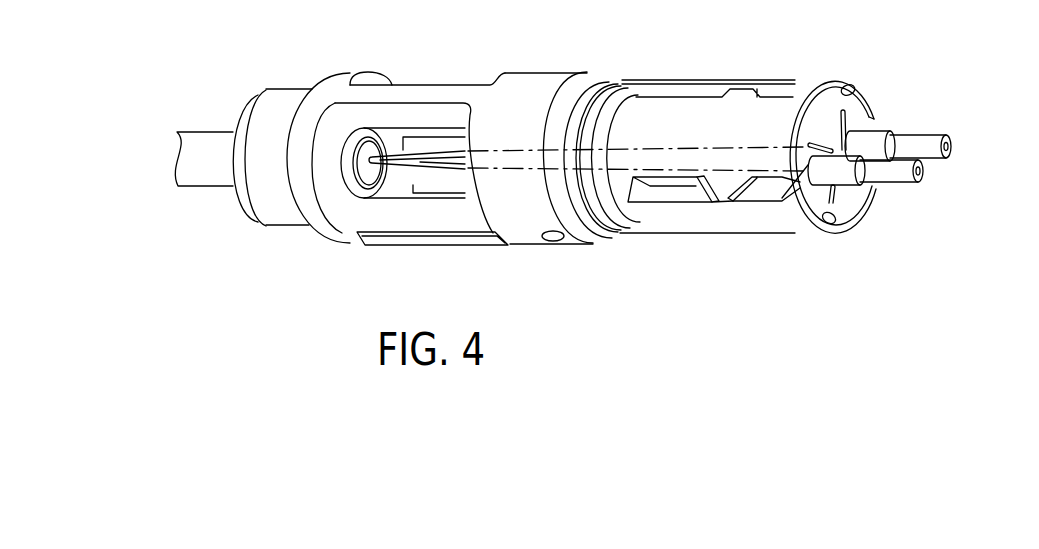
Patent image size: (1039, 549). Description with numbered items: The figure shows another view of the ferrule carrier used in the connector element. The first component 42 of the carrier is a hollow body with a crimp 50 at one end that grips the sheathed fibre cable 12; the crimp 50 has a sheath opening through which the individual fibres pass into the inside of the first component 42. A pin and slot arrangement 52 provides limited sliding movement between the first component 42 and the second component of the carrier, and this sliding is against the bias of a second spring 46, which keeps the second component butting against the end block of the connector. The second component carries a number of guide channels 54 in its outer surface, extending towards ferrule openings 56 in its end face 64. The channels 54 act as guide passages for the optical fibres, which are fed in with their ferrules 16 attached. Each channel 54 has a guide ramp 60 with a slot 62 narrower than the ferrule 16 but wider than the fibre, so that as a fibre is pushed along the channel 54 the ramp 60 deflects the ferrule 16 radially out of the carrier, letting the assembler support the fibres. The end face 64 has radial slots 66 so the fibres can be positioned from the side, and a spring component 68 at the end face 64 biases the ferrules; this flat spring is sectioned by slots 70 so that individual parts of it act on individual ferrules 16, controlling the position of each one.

The sheathed fibre cable 12 is at (374, 176).
The ferrule 16 is at (925, 152).
The first component 42 is at (527, 229).
The second spring 46 is at (618, 97).
The crimp 50 is at (287, 207).
The pin and slot arrangement 52 is at (563, 240).
The guide channel 54 is at (674, 192).
The ferrule opening 56 is at (866, 118).
The guide ramp 60 is at (703, 198).
The slot 62 is at (735, 186).
The end face 64 is at (903, 200).
The radial slot 66 is at (868, 124).
The spring component 68 is at (853, 203).
The slot 70 is at (840, 110).